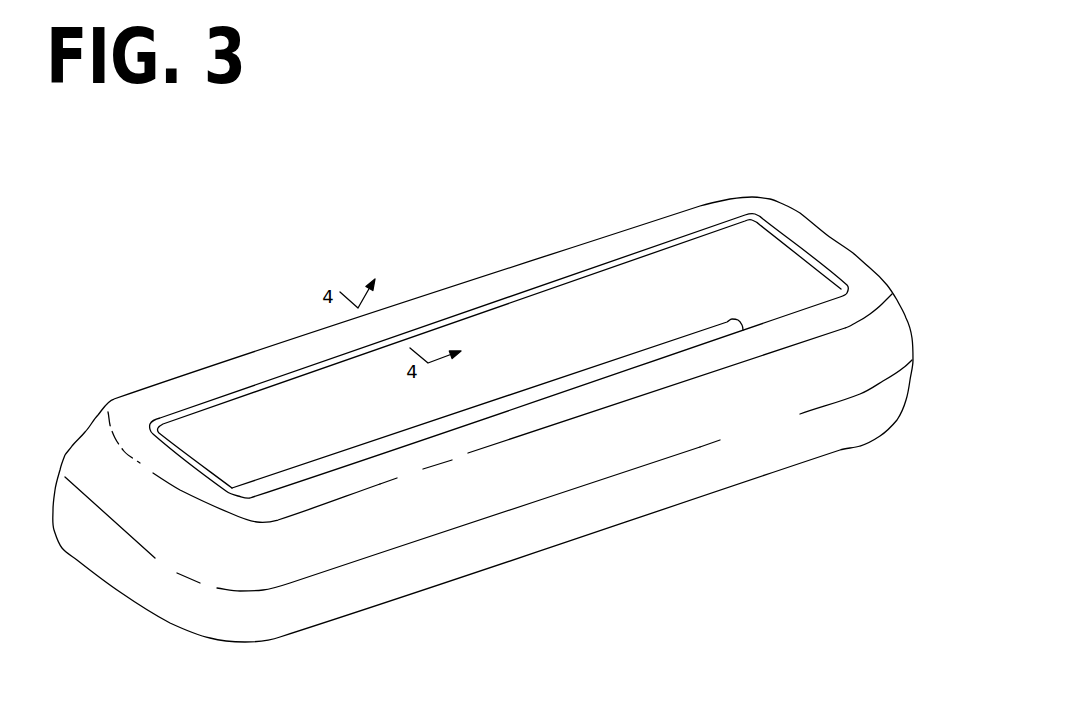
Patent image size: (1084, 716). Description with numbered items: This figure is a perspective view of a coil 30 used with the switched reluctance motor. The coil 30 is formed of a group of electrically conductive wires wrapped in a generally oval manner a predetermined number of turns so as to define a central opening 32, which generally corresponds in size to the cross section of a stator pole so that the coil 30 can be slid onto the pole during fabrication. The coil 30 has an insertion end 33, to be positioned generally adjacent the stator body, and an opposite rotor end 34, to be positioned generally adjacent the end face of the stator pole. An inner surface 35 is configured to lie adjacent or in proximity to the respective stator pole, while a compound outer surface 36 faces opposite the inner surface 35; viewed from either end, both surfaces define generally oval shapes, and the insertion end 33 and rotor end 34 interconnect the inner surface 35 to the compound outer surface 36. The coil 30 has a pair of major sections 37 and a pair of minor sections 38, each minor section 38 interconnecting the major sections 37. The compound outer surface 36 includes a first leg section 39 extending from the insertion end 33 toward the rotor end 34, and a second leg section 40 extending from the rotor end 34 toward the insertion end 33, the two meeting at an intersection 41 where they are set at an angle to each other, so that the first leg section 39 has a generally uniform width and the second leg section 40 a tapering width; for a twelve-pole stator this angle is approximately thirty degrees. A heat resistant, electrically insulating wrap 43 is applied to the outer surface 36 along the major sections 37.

The coil 30 is at (713, 93).
The central opening 32 is at (758, 248).
The insertion end 33 is at (337, 620).
The rotor end 34 is at (471, 295).
The inner surface 35 is at (628, 277).
The compound outer surface 36 is at (850, 420).
The major section 37 is at (270, 350).
The minor section 38 is at (853, 268).
The first leg section 39 is at (697, 491).
The second leg section 40 is at (743, 405).
The intersection 41 is at (435, 535).
The insulating wrap 43 is at (723, 200).